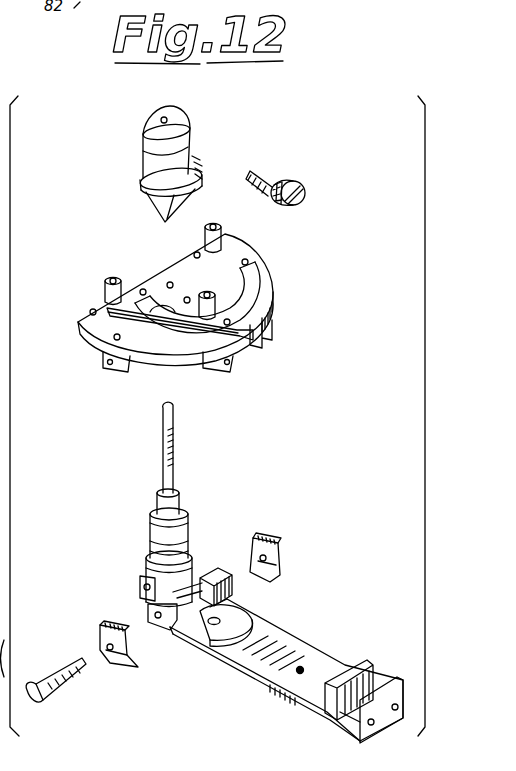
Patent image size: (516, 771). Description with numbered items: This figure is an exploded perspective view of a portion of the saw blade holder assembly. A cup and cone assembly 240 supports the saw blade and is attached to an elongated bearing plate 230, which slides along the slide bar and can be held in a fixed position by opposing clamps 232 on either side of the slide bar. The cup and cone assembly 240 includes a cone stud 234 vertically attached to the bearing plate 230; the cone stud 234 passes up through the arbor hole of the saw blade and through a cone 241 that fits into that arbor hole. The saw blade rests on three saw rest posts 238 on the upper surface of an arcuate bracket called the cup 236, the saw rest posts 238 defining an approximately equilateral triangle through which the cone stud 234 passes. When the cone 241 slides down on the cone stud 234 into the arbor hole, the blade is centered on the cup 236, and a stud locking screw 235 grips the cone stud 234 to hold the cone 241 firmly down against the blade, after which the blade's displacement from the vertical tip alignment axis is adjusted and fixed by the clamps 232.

The bearing plate 230 is at (293, 645).
The clamps 232 is at (282, 553).
The cone stud 234 is at (175, 440).
The stud locking screw 235 is at (302, 178).
The cup 236 is at (275, 292).
The saw rest posts 238 is at (112, 277).
The cup and cone assembly 240 is at (289, 126).
The cone 241 is at (143, 160).